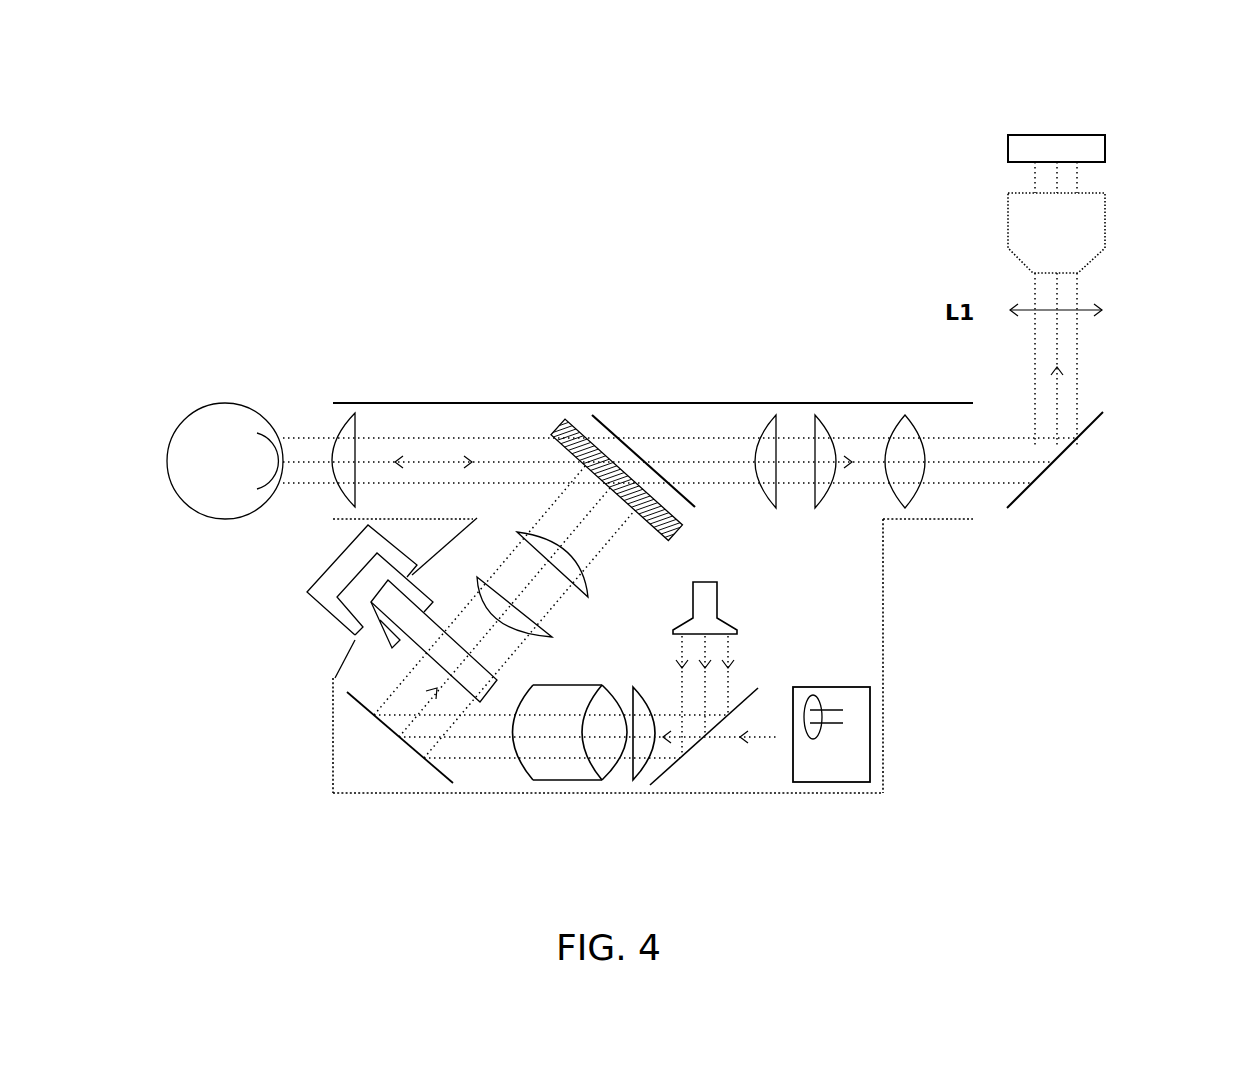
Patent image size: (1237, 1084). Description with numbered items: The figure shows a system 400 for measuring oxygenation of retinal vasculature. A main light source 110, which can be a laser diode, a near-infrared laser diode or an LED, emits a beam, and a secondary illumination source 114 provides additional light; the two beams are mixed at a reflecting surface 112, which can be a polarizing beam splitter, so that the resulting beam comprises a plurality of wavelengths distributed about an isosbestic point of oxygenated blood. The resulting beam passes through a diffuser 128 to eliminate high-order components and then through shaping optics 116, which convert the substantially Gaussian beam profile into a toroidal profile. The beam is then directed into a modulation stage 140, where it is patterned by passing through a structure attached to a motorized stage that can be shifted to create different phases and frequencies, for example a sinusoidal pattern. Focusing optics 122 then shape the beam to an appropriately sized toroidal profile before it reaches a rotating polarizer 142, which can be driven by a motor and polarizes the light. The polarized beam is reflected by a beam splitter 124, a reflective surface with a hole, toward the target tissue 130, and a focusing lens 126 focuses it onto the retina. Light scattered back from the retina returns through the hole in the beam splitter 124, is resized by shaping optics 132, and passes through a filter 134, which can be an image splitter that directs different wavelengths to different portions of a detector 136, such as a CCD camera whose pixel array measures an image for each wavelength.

The system for measuring oxygenation of retinal vasculature 400 is at (516, 88).
The light source 110 is at (870, 715).
The reflecting surface 112 is at (757, 688).
The secondary illumination source 114 is at (718, 582).
The shaping optics 116 is at (543, 768).
The focusing optics 122 is at (560, 570).
The beam splitter 124 is at (592, 414).
The focusing lens 126 is at (357, 418).
The diffuser 128 is at (635, 783).
The target tissue 130 is at (234, 403).
The shaping optics 132 is at (838, 414).
The filter 134 is at (1105, 235).
The detector 136 is at (1105, 140).
The modulation stage 140 is at (337, 628).
The rotating polarizer 142 is at (556, 422).